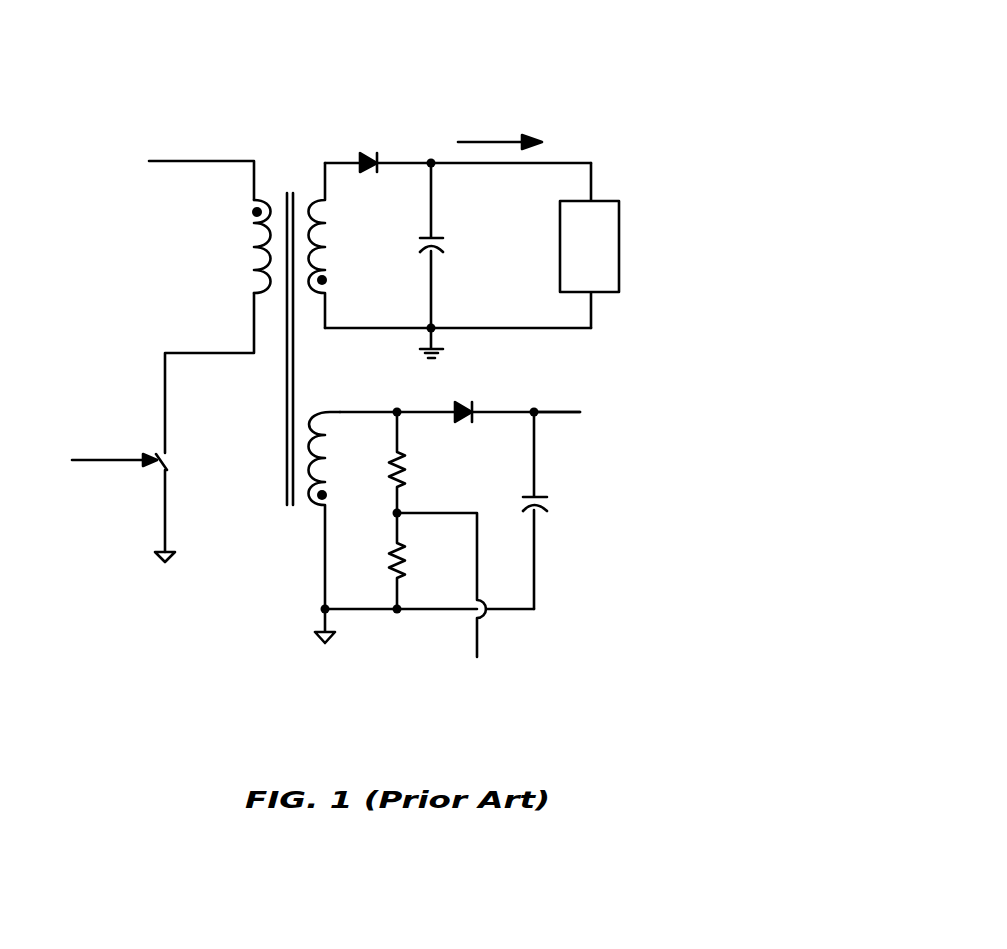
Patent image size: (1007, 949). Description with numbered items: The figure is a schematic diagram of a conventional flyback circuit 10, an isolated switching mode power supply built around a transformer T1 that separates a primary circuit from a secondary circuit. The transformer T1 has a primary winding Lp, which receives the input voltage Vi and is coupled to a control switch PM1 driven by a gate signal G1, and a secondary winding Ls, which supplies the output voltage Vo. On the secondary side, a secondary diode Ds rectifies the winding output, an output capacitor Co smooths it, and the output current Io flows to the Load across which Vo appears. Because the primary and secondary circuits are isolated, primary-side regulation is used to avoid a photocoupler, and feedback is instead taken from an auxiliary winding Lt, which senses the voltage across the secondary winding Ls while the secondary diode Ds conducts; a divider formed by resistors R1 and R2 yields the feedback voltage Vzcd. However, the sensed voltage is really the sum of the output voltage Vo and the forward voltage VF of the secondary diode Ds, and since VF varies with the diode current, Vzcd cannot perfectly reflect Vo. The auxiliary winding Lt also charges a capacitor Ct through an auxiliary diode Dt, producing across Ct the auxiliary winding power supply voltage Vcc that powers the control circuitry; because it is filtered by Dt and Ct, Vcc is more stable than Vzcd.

The flyback circuit 10 is at (625, 57).
The input voltage Vi is at (186, 174).
The transformer T1 is at (290, 376).
The primary winding Lp is at (246, 246).
The secondary winding Ls is at (334, 245).
The auxiliary winding Lt is at (333, 510).
The control switch PM1 is at (191, 504).
The gate drive signal G1 is at (114, 447).
The secondary diode Ds is at (372, 176).
The forward voltage VF is at (370, 140).
The output current Io is at (500, 131).
The output capacitor Co is at (449, 259).
The load Load is at (590, 245).
The output voltage Vo is at (652, 246).
The auxiliary diode Dt is at (466, 399).
The auxiliary winding power supply voltage Vcc is at (580, 414).
The divider resistor R1 is at (418, 462).
The divider resistor R2 is at (418, 561).
The auxiliary winding feedback voltage Vzcd is at (453, 605).
The capacitor Ct is at (551, 510).